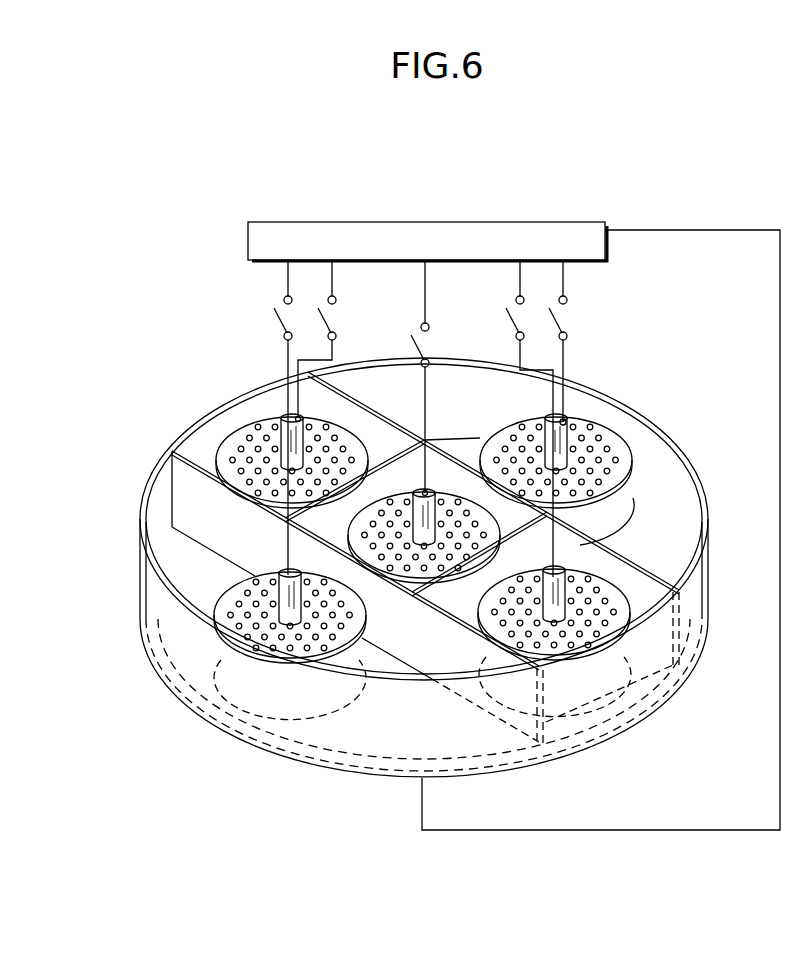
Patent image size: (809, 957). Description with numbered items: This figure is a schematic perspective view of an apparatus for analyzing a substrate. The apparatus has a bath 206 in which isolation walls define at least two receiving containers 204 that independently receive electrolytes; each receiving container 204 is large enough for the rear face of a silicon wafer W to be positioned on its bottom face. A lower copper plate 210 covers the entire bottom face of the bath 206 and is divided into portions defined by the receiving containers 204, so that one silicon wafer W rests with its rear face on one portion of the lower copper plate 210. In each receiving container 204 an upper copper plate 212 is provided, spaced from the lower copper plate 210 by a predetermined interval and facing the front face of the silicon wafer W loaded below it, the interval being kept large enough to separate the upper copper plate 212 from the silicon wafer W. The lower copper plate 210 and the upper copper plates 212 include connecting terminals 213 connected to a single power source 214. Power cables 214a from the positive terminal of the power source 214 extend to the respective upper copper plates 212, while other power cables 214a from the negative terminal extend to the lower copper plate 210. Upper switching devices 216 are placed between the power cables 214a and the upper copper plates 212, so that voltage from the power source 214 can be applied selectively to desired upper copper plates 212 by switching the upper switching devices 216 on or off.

The receiving containers 204 is at (185, 475).
The bath 206 is at (138, 576).
The lower copper plate 210 is at (227, 722).
The upper copper plates 212 is at (232, 445).
The connecting terminals 213 is at (566, 424).
The power source 214 is at (246, 240).
The power cables 214a is at (280, 358).
The upper switching devices 216 is at (277, 320).
The silicon wafers W is at (623, 497).